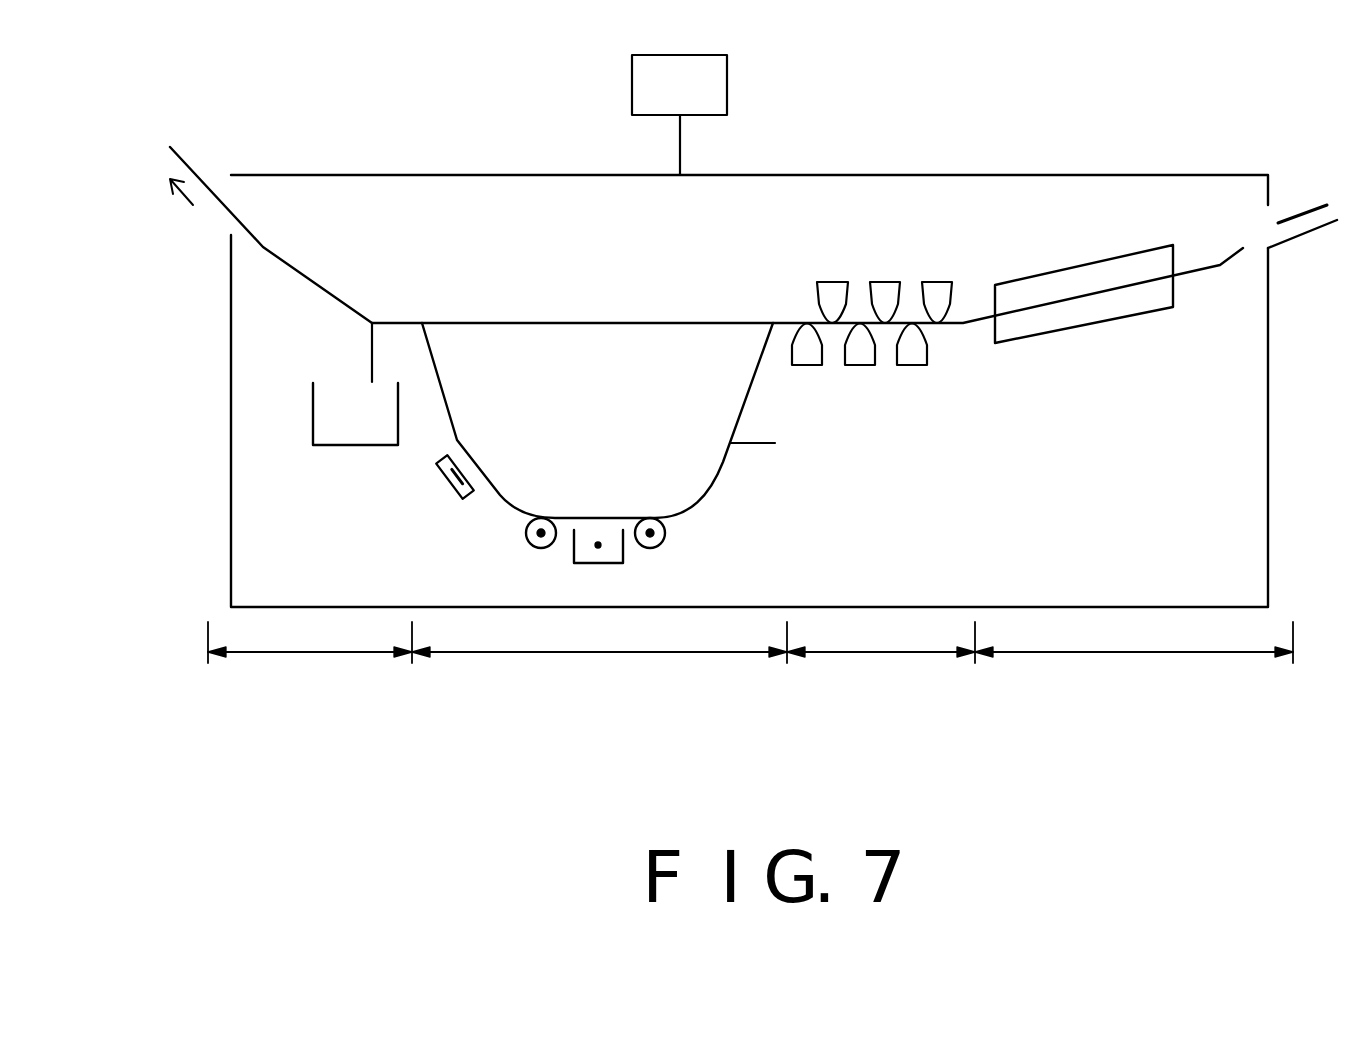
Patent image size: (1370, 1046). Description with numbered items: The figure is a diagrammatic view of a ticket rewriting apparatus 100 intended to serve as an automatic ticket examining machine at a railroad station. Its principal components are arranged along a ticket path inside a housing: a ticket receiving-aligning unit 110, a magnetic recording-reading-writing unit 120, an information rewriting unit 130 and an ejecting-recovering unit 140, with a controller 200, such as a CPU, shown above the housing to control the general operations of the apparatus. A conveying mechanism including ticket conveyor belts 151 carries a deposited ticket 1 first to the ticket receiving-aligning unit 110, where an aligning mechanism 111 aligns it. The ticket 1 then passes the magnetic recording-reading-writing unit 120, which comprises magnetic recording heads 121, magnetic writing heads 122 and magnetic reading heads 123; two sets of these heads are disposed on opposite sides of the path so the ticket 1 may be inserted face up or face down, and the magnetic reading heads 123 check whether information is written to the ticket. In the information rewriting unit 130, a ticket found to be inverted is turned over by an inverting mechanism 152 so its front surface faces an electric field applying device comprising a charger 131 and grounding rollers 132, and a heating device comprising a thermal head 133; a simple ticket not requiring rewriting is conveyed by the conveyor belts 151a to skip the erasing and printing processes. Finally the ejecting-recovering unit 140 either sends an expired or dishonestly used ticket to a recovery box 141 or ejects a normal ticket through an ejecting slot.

The ticket 1 is at (1298, 210).
The ticket rewriting apparatus 100 is at (1001, 169).
The ticket receiving-aligning unit 110 is at (1134, 688).
The aligning mechanism 111 is at (1065, 330).
The magnetic recording-reading-writing unit 120 is at (871, 703).
The magnetic recording head 121 is at (938, 282).
The magnetic writing head 122 is at (885, 282).
The magnetic reading head 123 is at (833, 282).
The information rewriting unit 130 is at (599, 703).
The charger 131 is at (608, 563).
The grounding rollers 132 is at (528, 543).
The thermal head 133 is at (450, 490).
The ejecting-recovering unit 140 is at (310, 703).
The recovery box 141 is at (353, 445).
The ticket conveyor belts 151 is at (222, 197).
The conveyor belts 151a is at (512, 323).
The inverting mechanism 152 is at (775, 443).
The controller 200 is at (717, 82).